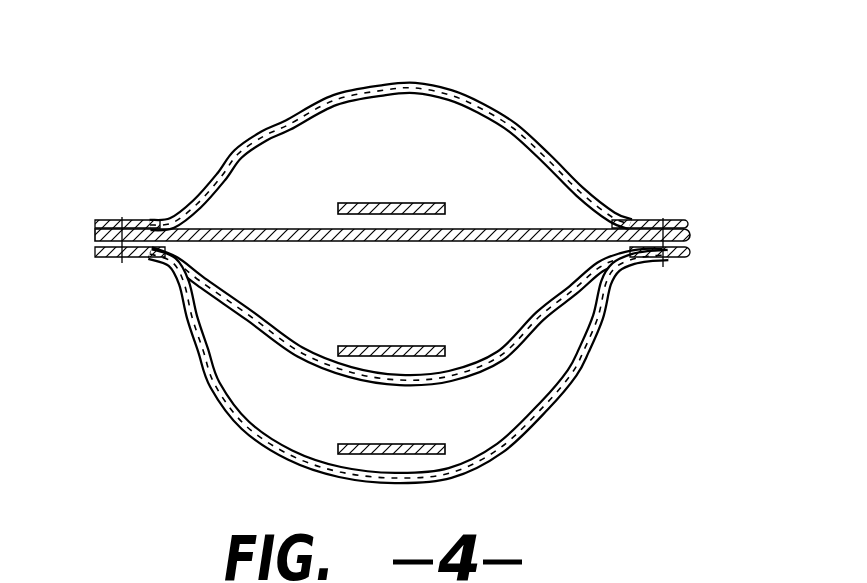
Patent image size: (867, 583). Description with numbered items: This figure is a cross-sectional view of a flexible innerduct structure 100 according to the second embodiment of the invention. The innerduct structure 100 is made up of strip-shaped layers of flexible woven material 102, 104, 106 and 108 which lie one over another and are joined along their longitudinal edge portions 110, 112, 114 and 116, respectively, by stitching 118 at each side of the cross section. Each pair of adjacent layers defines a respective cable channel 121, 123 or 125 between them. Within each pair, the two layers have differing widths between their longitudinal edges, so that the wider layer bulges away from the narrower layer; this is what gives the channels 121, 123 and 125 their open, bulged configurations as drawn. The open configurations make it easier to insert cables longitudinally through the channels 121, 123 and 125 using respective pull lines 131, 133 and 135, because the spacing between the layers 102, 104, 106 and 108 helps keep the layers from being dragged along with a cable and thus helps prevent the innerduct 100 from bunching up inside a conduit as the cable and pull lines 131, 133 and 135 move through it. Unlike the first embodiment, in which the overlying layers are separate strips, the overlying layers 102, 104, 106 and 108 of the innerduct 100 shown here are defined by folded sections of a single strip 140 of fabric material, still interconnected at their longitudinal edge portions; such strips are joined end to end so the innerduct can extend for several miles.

The flexible innerduct structure 100 is at (588, 120).
The layer of flexible woven material 102 is at (290, 228).
The layer of flexible woven material 104 is at (463, 90).
The layer of flexible woven material 106 is at (233, 322).
The layer of flexible woven material 108 is at (246, 425).
The longitudinal edge portion 110 is at (140, 232).
The longitudinal edge portion 112 is at (137, 228).
The longitudinal edge portion 114 is at (138, 248).
The longitudinal edge portion 116 is at (110, 258).
The stitching 118 is at (120, 223).
The cable channel 121 is at (428, 160).
The cable channel 123 is at (428, 296).
The cable channel 125 is at (426, 425).
The pull line 131 is at (425, 203).
The pull line 133 is at (425, 346).
The pull line 135 is at (425, 444).
The single strip of fabric material 140 is at (326, 96).